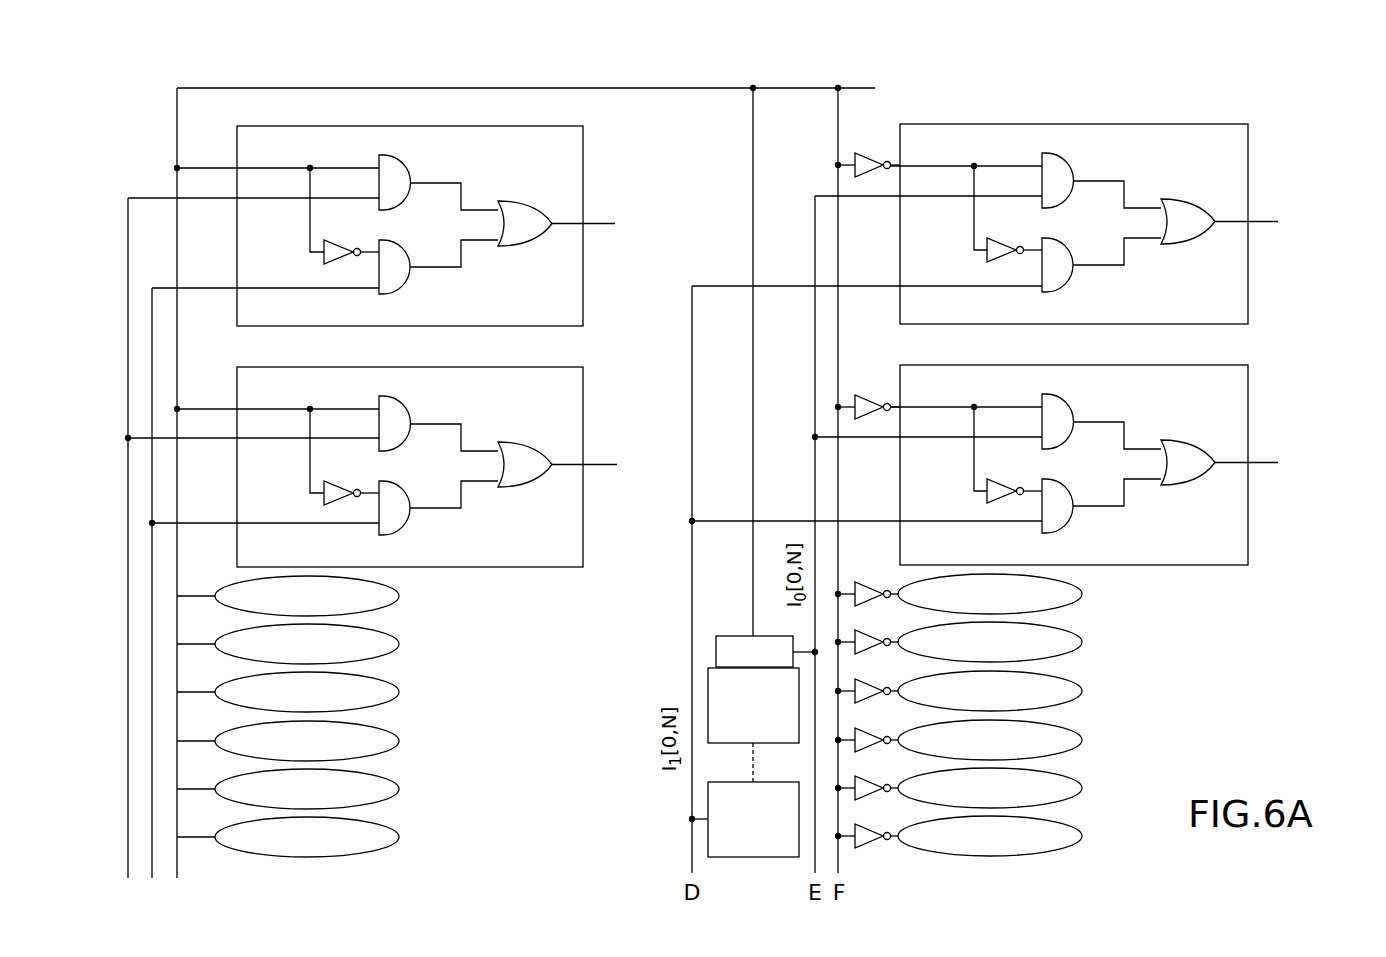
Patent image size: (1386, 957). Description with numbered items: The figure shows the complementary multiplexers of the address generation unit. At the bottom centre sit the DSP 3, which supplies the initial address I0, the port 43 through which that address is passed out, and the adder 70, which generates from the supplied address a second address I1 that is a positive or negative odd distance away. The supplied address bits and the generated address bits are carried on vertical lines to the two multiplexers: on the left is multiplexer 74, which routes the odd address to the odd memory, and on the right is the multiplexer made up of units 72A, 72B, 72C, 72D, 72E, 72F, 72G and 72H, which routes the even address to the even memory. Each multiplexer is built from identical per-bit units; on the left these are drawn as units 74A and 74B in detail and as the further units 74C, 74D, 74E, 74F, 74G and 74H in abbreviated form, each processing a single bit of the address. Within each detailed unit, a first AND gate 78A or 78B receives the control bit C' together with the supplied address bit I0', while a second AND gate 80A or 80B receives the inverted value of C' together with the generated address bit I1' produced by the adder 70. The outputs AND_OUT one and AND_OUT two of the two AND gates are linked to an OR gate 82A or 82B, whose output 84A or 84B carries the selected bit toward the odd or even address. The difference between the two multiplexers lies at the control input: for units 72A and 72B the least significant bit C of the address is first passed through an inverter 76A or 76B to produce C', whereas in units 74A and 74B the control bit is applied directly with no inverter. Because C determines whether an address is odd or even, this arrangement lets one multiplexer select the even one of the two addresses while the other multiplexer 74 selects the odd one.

The multiplexer 74 is at (352, 88).
The multiplexer unit 74A is at (585, 153).
The multiplexer unit 74B is at (585, 395).
The multiplexer unit 74C is at (399, 594).
The multiplexer unit 74D is at (399, 642).
The multiplexer unit 74E is at (399, 690).
The multiplexer unit 74F is at (399, 739).
The multiplexer unit 74G is at (399, 787).
The multiplexer unit 74H is at (399, 835).
The multiplexer unit 72A is at (1249, 148).
The multiplexer unit 72B is at (1249, 389).
The multiplexer unit 72C is at (1082, 592).
The multiplexer unit 72D is at (1082, 640).
The multiplexer unit 72E is at (1082, 689).
The multiplexer unit 72F is at (1082, 738).
The multiplexer unit 72G is at (1082, 786).
The multiplexer unit 72H is at (1082, 834).
The inverter 76A is at (873, 150).
The inverter 76B is at (872, 390).
The AND gate 78A is at (383, 153).
The AND gate 78B is at (383, 394).
The second AND gate 80A is at (410, 258).
The second AND gate 80B is at (410, 499).
The OR gate 82A is at (545, 243).
The OR gate 82B is at (545, 485).
The OR gate output 84A is at (592, 223).
The OR gate output 84B is at (592, 464).
The port 43 is at (716, 653).
The DSP 3 is at (708, 685).
The adder 70 is at (708, 843).